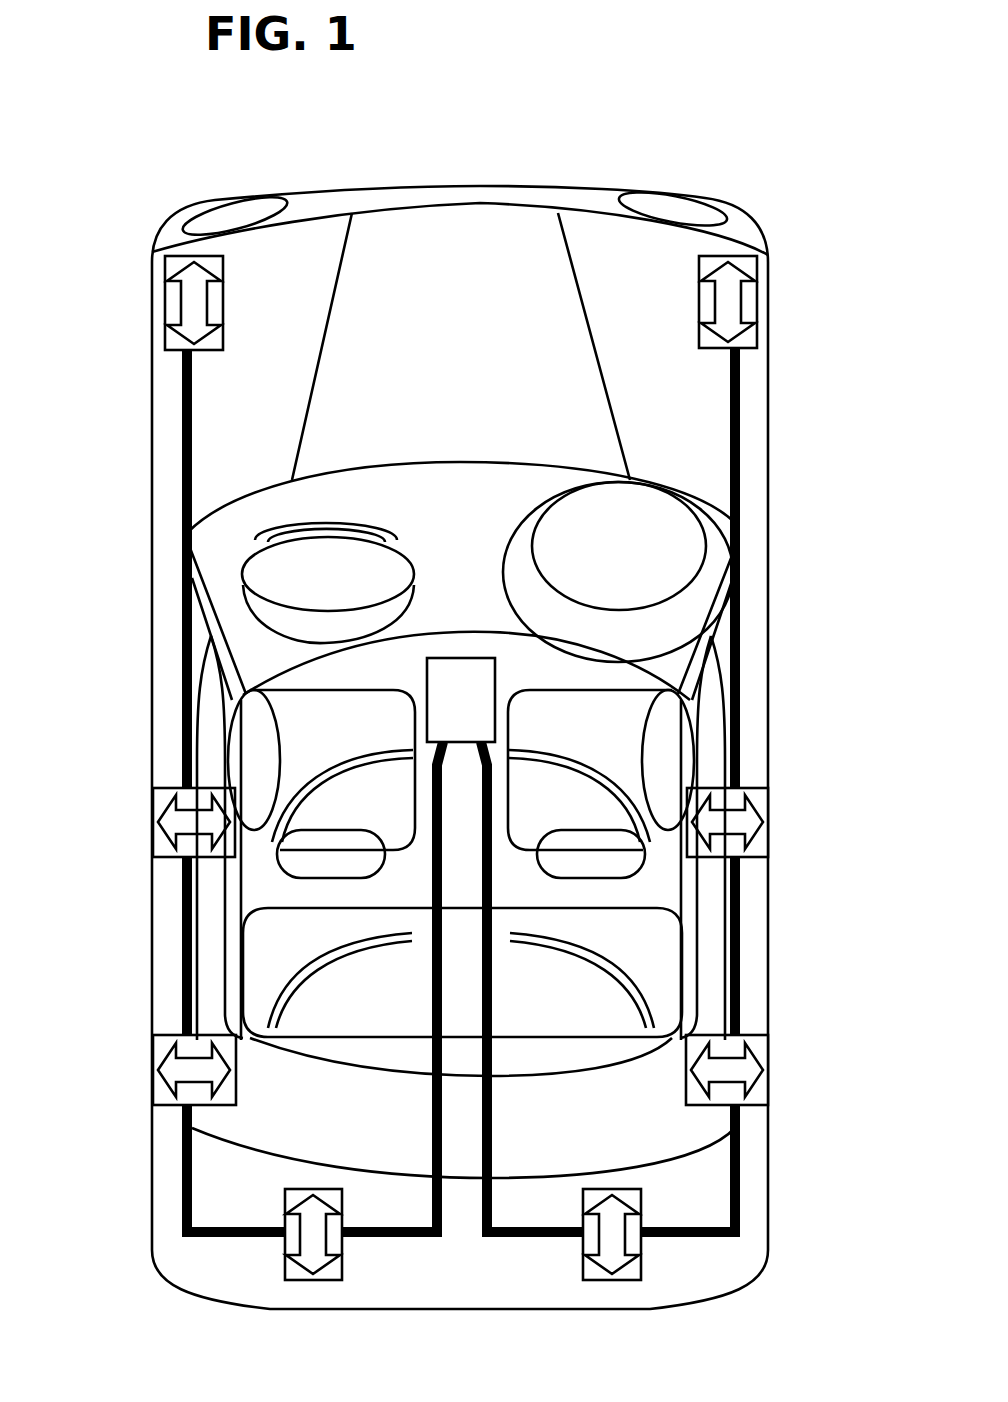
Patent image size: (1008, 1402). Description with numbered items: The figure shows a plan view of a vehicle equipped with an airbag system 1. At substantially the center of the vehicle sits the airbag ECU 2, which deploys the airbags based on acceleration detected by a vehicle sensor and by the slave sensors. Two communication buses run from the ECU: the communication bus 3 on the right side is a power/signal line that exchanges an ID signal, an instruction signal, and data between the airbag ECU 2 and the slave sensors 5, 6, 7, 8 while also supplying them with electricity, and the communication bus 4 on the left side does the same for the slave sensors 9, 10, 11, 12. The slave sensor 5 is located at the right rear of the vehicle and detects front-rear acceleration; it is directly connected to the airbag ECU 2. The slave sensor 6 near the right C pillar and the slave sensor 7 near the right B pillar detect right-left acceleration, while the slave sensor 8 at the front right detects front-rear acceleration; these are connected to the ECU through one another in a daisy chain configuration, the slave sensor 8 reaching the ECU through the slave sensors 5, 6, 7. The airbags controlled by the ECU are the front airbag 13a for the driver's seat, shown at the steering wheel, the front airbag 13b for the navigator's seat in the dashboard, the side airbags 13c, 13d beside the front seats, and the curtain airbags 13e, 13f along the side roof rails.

The airbag system 1 is at (801, 576).
The airbag ECU 2 is at (457, 658).
The communication bus 3 is at (740, 656).
The communication bus 4 is at (185, 685).
The slave sensor 5 is at (593, 1273).
The slave sensor 6 is at (758, 1046).
The slave sensor 7 is at (758, 800).
The slave sensor 8 is at (745, 292).
The slave sensor 9 is at (292, 1273).
The slave sensor 10 is at (160, 1052).
The slave sensor 11 is at (160, 814).
The slave sensor 12 is at (178, 292).
The front airbag for driver's seat 13a is at (680, 548).
The front airbag for navigator's seat 13b is at (267, 571).
The side airbag 13c is at (680, 752).
The side airbag 13d is at (246, 760).
The curtain airbag 13e is at (712, 940).
The curtain airbag 13f is at (205, 950).